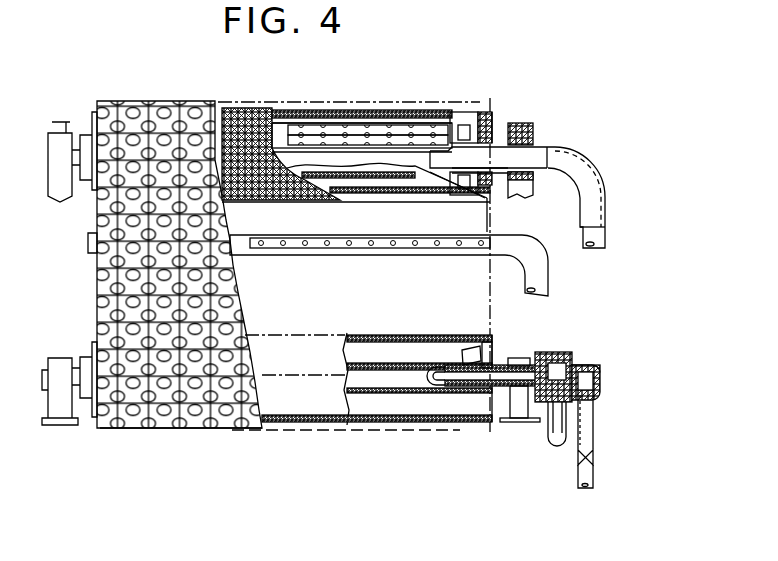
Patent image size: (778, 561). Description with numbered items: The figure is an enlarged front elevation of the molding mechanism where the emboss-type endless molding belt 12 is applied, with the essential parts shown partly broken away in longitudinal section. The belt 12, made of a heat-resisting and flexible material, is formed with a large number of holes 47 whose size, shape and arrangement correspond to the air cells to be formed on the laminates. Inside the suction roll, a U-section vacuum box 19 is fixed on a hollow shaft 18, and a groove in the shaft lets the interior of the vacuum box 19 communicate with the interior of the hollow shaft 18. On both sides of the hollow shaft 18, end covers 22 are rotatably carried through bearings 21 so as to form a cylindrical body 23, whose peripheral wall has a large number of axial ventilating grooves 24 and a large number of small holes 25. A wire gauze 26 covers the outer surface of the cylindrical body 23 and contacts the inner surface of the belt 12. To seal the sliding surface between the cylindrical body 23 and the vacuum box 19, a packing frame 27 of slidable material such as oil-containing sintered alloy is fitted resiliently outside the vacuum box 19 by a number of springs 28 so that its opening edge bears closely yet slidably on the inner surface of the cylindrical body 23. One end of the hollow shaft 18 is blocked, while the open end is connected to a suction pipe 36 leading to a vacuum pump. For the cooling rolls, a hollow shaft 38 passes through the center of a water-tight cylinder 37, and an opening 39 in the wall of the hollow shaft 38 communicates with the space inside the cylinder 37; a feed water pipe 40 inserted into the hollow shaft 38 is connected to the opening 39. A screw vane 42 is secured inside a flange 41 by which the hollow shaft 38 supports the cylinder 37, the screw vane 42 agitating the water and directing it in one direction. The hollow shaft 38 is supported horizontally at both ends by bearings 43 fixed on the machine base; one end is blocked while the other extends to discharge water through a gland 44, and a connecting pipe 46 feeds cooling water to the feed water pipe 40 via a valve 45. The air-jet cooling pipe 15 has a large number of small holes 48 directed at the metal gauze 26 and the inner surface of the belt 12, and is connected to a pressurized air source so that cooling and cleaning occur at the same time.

The endless molding belt 12 is at (97, 258).
The air-jet cooling pipe 15 is at (550, 274).
The hollow shaft 18 is at (544, 147).
The vacuum box 19 is at (455, 118).
The bearings 21 is at (495, 178).
The end covers 22 is at (498, 118).
The cylindrical body 23 is at (346, 118).
The axial ventilating grooves 24 is at (377, 190).
The small holes 25 is at (313, 118).
The wire gauze 26 is at (249, 108).
The packing frame 27 is at (466, 115).
The springs 28 is at (486, 120).
The suction pipe 36 is at (605, 204).
The cylinder 37 is at (363, 348).
The hollow shaft 38 is at (377, 388).
The opening 39 is at (433, 367).
The feed water pipe 40 is at (502, 388).
The flange 41 is at (483, 345).
The screw vane 42 is at (461, 350).
The bearings 43 is at (516, 358).
The gland 44 is at (550, 358).
The valve 45 is at (595, 440).
The connecting pipe 46 is at (597, 478).
The holes 47 is at (122, 422).
The small holes 48 is at (293, 253).